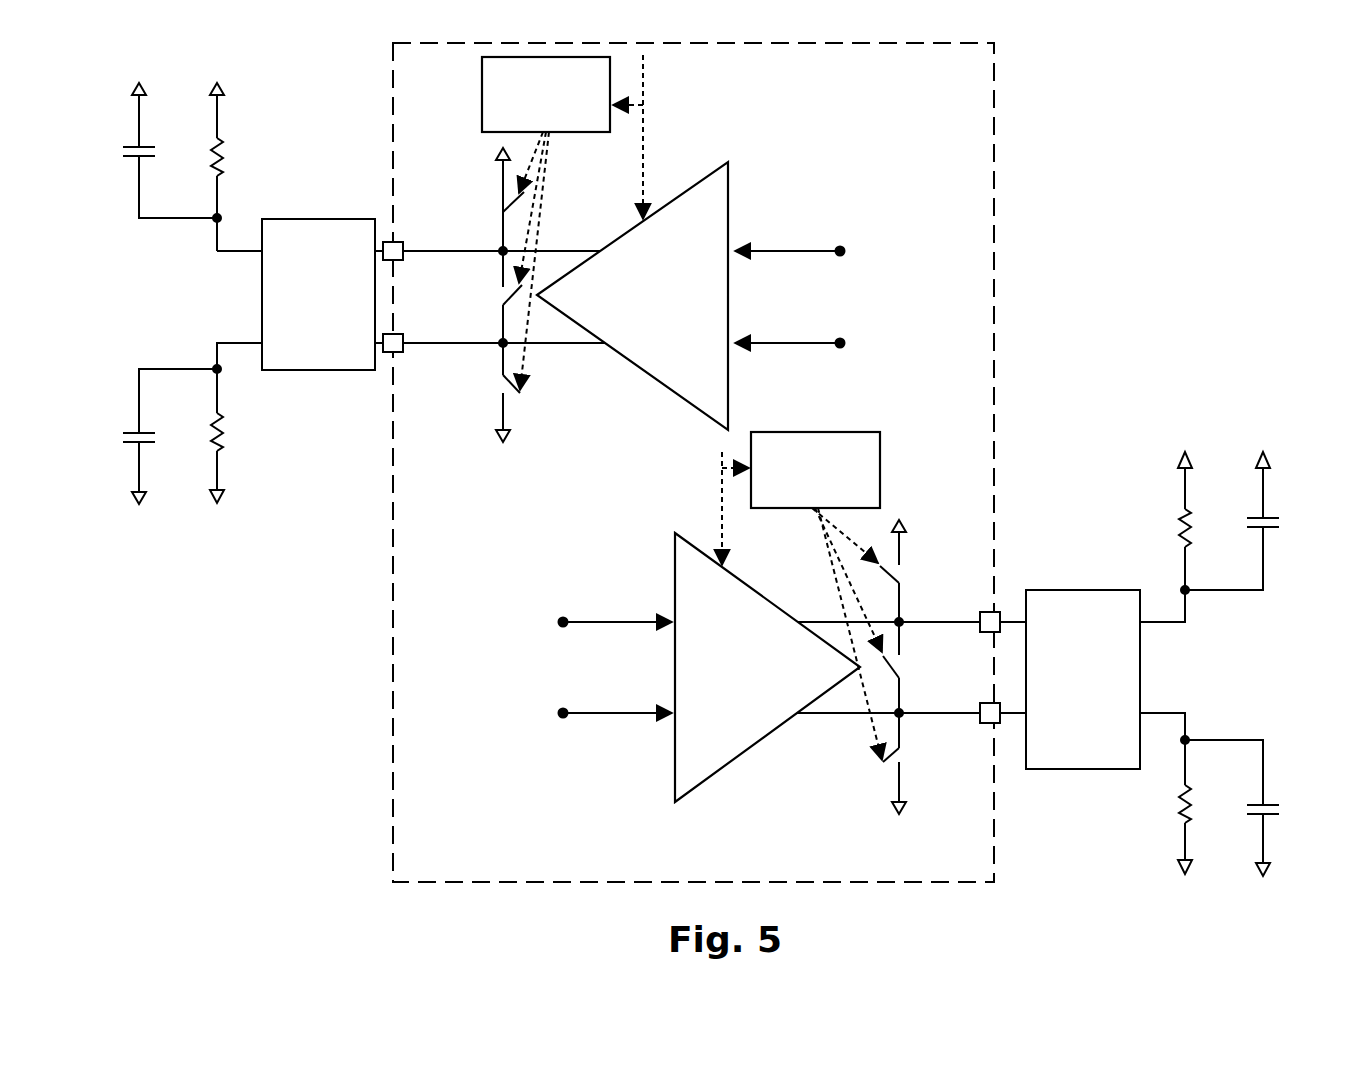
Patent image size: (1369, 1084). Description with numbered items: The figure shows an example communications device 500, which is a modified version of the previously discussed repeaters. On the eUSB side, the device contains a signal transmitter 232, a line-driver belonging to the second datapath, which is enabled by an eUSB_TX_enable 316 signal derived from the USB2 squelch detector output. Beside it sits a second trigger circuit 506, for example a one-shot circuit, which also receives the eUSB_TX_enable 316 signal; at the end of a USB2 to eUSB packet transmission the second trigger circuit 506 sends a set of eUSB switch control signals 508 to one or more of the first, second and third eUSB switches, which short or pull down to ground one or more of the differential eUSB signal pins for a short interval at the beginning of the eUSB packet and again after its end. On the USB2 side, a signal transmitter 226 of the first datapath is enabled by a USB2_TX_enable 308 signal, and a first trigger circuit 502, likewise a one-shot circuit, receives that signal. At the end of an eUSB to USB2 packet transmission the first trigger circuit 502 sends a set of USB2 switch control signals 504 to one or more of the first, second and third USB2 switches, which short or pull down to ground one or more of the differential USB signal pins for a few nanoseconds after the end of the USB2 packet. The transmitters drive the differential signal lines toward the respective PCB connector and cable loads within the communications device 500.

The communications device 500 is at (1210, 132).
The second trigger circuit 506 is at (546, 94).
The eUSB switch control signals 508 is at (552, 261).
The eUSB_TX_enable signal 316 is at (675, 137).
The signal transmitter 232 is at (691, 296).
The first trigger circuit 502 is at (815, 470).
The USB2 switch control signals 504 is at (832, 634).
The USB2_TX_enable signal 308 is at (691, 508).
The signal transmitter 226 is at (710, 667).